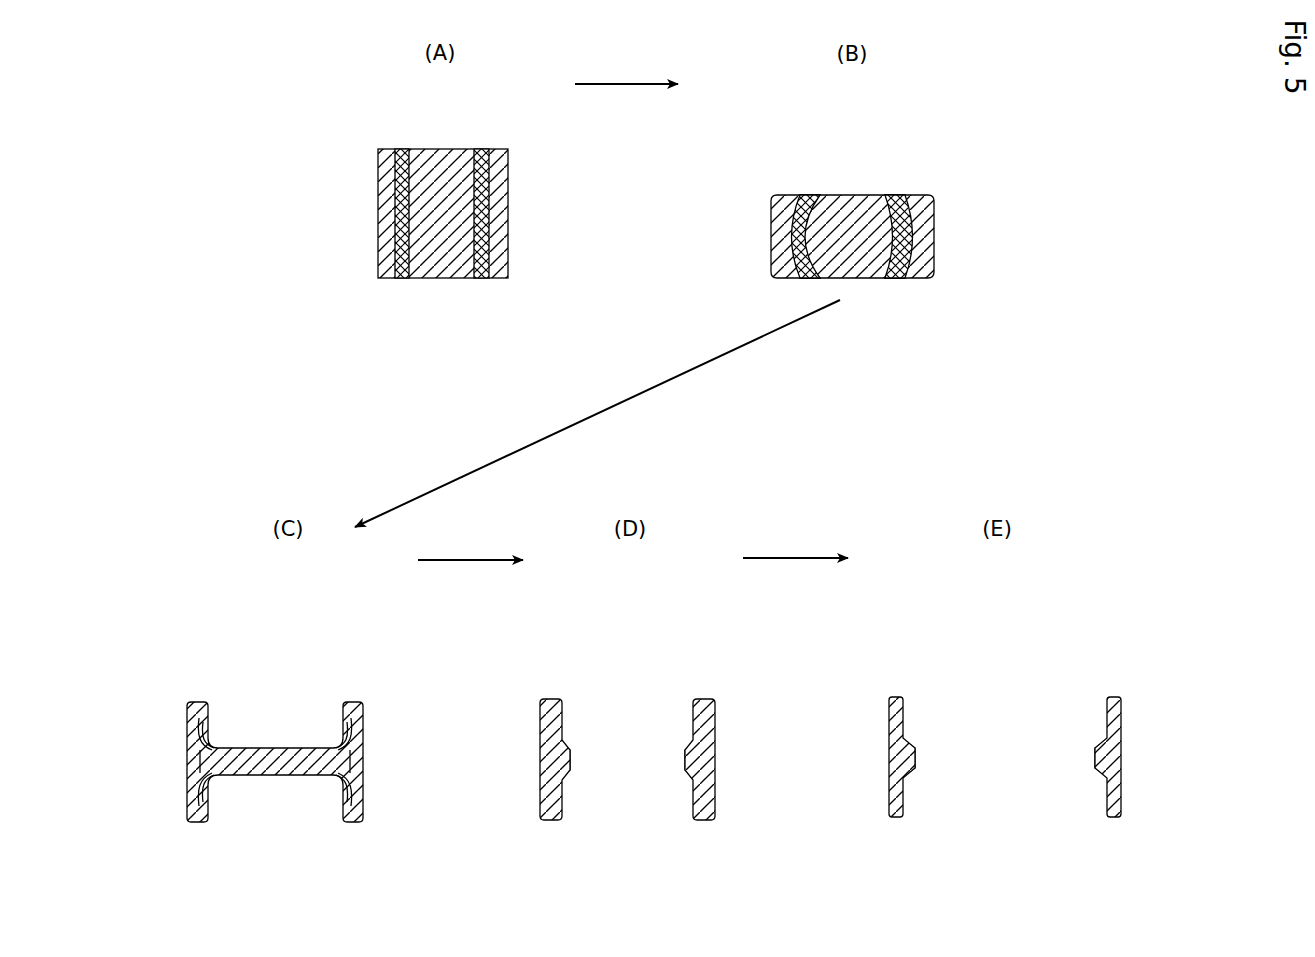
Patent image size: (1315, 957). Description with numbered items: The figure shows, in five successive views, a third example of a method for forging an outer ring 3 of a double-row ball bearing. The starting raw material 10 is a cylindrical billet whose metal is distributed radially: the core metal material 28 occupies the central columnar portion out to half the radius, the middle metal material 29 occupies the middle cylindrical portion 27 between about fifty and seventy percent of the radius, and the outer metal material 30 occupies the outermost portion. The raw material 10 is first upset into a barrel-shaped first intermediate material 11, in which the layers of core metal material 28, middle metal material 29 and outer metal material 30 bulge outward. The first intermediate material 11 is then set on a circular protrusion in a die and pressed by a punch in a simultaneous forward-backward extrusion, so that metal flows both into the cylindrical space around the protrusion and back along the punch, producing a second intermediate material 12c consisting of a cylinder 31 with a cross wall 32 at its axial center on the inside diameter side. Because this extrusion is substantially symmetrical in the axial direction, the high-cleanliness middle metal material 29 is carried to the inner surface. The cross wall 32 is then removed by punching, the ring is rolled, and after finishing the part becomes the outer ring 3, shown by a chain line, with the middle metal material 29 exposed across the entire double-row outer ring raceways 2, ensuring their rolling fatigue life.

The raw material 10 is at (422, 167).
The first intermediate material 11 is at (921, 200).
The second intermediate material 12c is at (355, 708).
The middle cylindrical portion 27 is at (484, 158).
The core metal material 28 is at (442, 167).
The middle metal material 29 is at (360, 780).
The outer metal material 30 is at (497, 215).
The cylinder 31 is at (196, 820).
The cross wall 32 is at (262, 750).
The outer ring 3 is at (904, 704).
The outer ring raceways 2 is at (1100, 742).